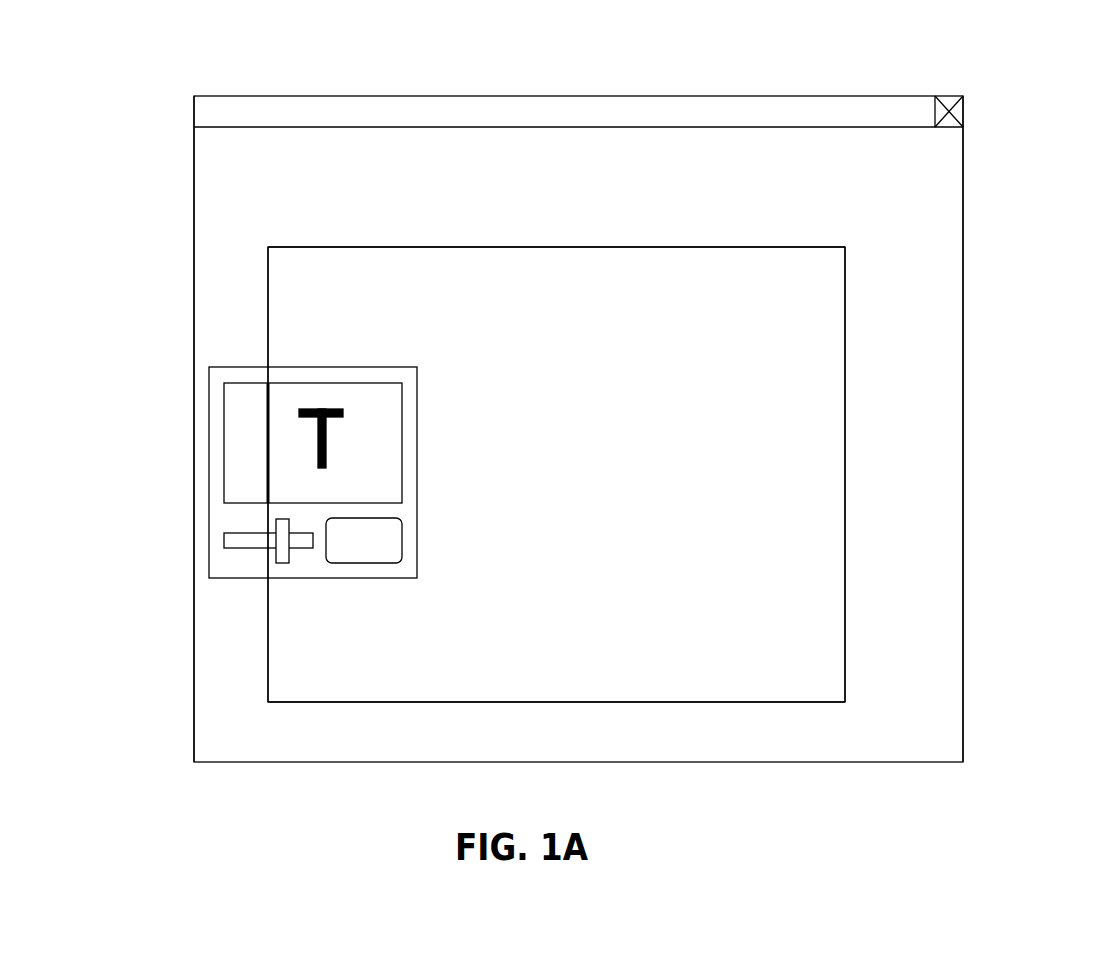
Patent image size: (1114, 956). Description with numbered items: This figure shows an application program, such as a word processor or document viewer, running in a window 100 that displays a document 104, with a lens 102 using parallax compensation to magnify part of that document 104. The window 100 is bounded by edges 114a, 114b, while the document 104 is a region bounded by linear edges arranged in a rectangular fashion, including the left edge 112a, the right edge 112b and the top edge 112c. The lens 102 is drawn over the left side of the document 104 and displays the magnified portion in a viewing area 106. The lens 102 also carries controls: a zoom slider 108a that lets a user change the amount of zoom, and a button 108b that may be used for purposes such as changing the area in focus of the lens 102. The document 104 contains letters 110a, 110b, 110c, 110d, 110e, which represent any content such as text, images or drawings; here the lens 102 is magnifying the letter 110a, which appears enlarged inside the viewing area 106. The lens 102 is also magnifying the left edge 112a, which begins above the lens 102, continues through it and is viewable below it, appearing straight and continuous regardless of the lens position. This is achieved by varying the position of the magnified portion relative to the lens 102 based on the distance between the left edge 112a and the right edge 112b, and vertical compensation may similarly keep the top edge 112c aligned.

The window 100 is at (158, 57).
The lens 102 is at (209, 562).
The document 104 is at (268, 323).
The viewing area 106 is at (224, 441).
The zoom slider 108a is at (277, 563).
The button 108b is at (343, 563).
The letter 110a is at (322, 409).
The letter 110b is at (505, 440).
The letter 110c is at (668, 440).
The letter 110d is at (830, 442).
The letter 110e is at (840, 259).
The left edge 112a is at (268, 278).
The right edge 112b is at (845, 534).
The top edge 112c is at (565, 247).
The edge of the window 114a is at (194, 353).
The edge of the window 114b is at (963, 370).